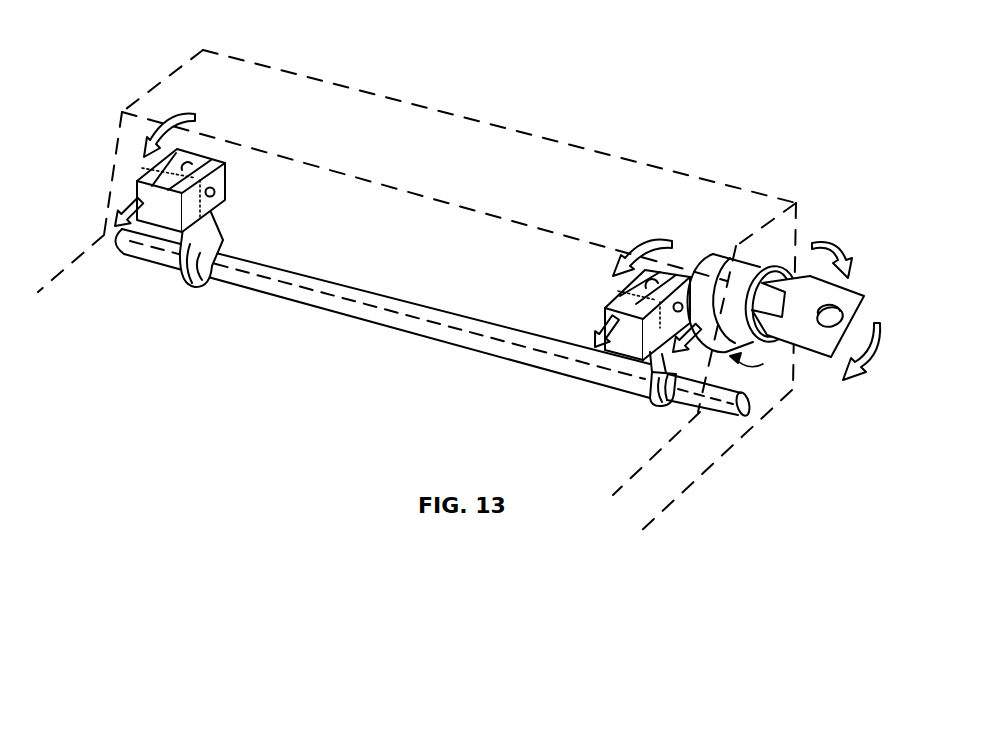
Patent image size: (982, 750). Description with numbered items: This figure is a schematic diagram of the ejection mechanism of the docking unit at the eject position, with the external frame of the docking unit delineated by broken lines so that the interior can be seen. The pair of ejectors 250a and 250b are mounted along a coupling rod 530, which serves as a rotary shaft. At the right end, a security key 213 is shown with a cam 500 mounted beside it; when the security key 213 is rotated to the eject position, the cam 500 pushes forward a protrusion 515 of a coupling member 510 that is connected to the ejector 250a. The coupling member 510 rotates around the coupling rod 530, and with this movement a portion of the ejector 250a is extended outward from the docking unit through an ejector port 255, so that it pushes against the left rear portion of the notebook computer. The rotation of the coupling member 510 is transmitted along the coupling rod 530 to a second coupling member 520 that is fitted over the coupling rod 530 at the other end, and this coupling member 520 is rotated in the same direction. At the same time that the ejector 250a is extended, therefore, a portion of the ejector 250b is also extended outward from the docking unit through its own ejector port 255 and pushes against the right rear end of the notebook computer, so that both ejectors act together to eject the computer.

The security key 213 is at (850, 302).
The ejector 250a is at (612, 308).
The ejector 250b is at (180, 152).
The ejector port 255 is at (213, 203).
The cam 500 is at (762, 265).
The coupling member 510 is at (655, 397).
The protrusion 515 is at (682, 352).
The coupling member 520 is at (190, 287).
The coupling rod 530 is at (722, 402).